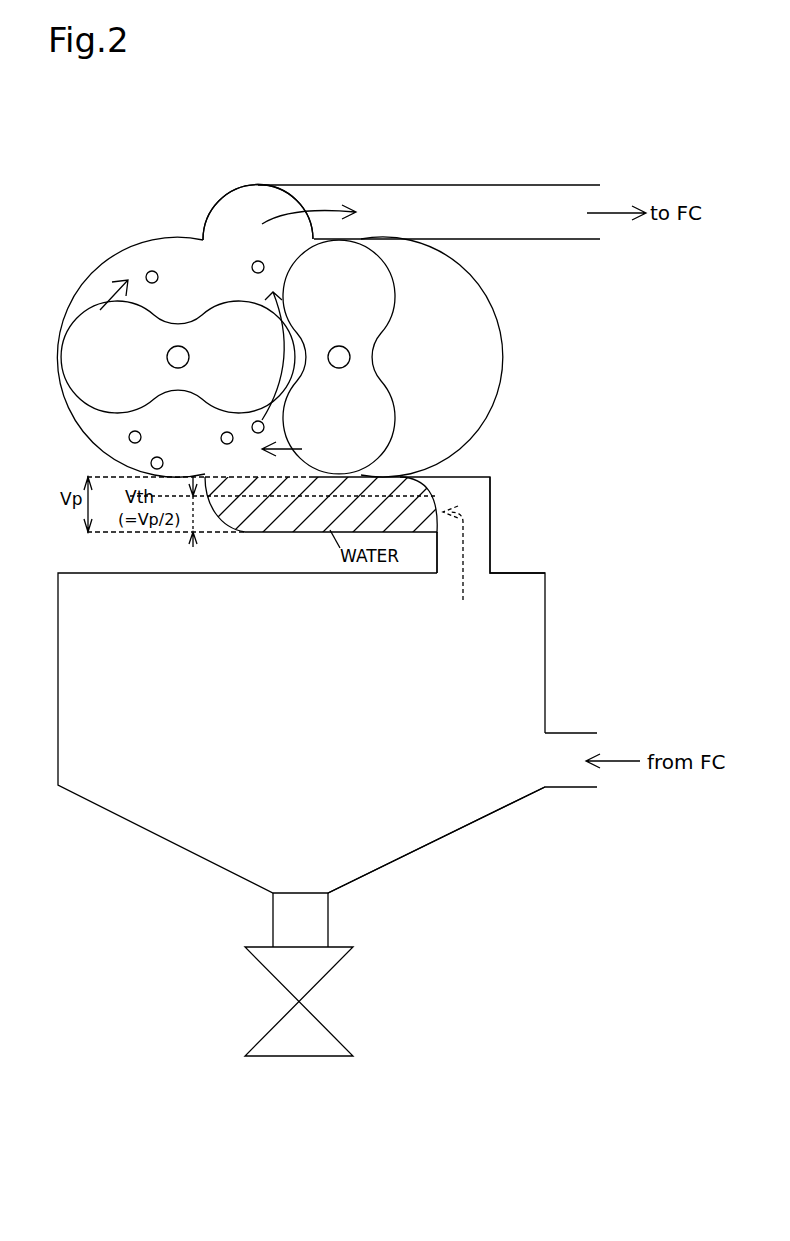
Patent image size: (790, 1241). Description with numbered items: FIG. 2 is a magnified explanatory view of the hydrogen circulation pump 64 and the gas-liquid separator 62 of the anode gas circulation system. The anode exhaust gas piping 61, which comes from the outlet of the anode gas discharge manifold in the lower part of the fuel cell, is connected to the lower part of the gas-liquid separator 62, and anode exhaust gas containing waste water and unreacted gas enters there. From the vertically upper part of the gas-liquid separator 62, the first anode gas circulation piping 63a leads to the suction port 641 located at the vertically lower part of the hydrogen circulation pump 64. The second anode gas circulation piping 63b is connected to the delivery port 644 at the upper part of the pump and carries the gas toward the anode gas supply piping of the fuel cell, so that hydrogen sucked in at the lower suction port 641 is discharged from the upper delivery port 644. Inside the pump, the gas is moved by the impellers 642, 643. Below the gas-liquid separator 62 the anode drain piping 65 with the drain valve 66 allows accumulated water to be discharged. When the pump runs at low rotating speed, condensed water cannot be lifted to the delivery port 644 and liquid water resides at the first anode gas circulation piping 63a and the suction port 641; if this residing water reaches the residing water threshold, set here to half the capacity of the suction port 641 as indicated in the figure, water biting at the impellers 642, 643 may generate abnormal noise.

The anode exhaust gas piping 61 is at (577, 790).
The gas-liquid separator 62 is at (462, 830).
The first anode gas circulation piping 63a is at (493, 520).
The second anode gas circulation piping 63b is at (535, 240).
The hydrogen circulation pump 64 is at (460, 353).
The suction port 641 is at (258, 517).
The impeller 642 is at (382, 308).
The impeller 643 is at (238, 318).
The delivery port 644 is at (245, 200).
The anode drain piping 65 is at (330, 925).
The drain valve 66 is at (337, 1037).